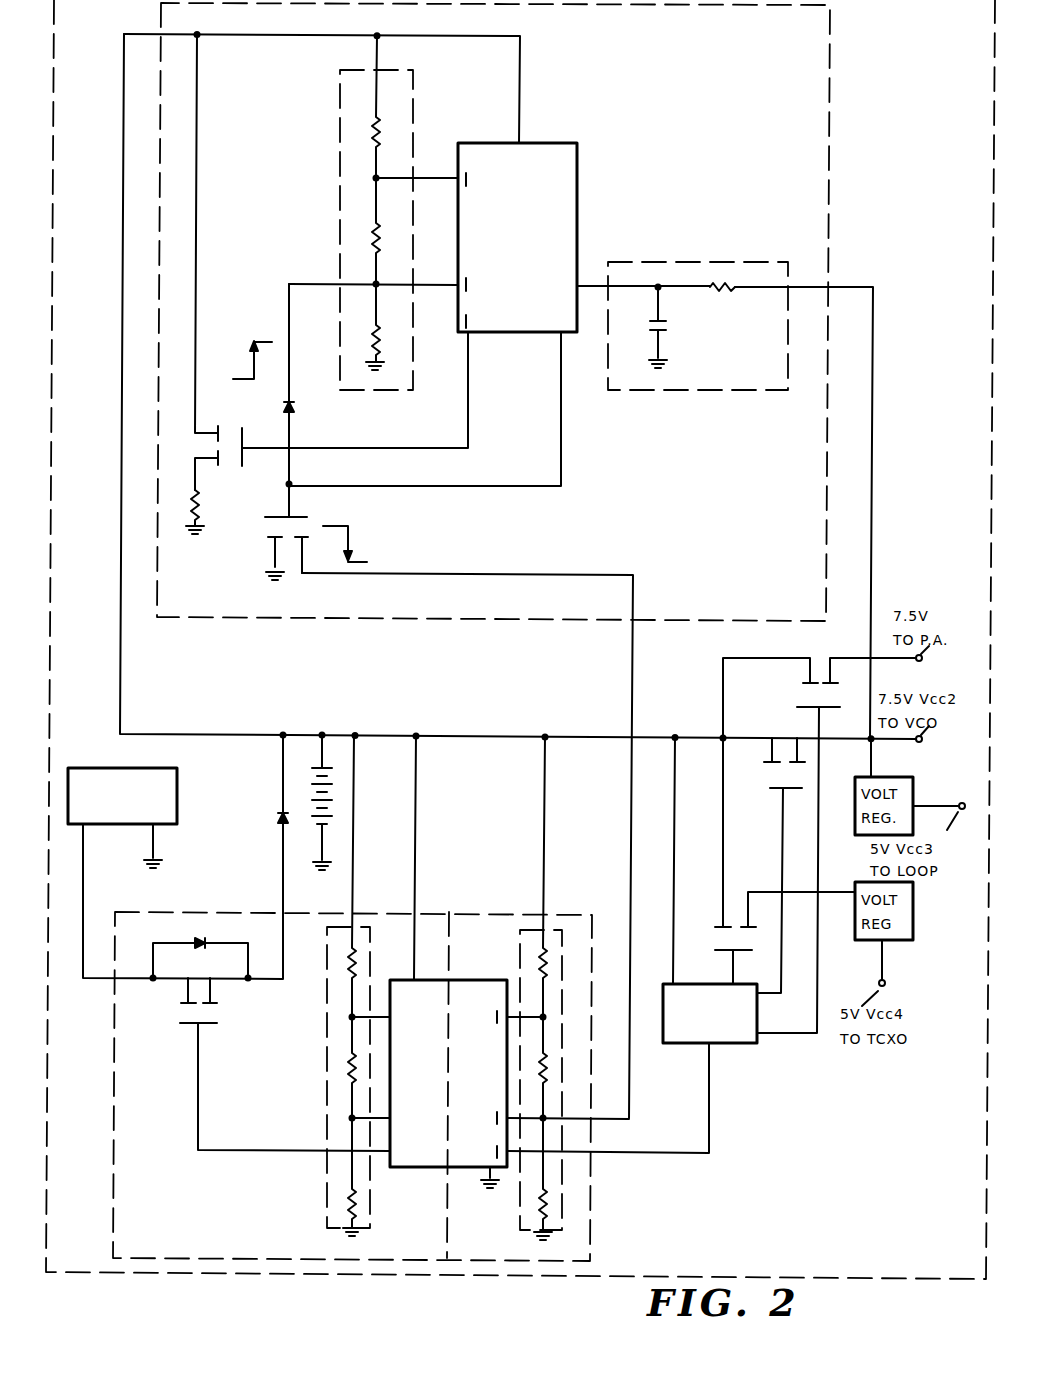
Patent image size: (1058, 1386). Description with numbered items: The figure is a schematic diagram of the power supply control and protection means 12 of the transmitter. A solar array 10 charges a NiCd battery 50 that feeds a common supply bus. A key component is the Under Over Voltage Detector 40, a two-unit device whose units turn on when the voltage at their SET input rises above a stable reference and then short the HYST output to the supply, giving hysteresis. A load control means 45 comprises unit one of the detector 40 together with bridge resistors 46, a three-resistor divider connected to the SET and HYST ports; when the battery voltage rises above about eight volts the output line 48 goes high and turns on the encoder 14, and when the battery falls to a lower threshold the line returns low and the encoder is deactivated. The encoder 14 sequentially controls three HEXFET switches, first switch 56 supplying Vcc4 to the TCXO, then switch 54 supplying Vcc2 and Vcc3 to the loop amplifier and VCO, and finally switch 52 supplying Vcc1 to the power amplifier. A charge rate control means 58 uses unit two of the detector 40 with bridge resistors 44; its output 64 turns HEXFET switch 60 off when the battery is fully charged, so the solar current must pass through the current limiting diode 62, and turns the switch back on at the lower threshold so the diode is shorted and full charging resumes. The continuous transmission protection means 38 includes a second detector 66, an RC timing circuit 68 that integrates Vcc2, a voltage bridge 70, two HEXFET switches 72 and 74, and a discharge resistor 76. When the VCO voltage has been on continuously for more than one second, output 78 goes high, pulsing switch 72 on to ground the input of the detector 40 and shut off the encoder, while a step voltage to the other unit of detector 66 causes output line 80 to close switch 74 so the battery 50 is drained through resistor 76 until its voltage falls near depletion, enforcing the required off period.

The solar array 10 is at (178, 770).
The power supply control and protection means 12 is at (937, 3).
The encoder 14 is at (733, 1044).
The continuous transmission protection means 38 is at (830, 55).
The Under Over Voltage Detector (UOVD) 40 is at (418, 1170).
The bridge resistors 44 is at (323, 990).
The load control means 45 is at (467, 910).
The bridge resistors 46 is at (518, 931).
The output line 48 is at (710, 1127).
The battery 50 is at (308, 815).
The HEXFET switch 52 is at (803, 706).
The HEXFET switch 54 is at (770, 788).
The HEXFET switch 56 is at (727, 950).
The charge rate control means 58 is at (429, 908).
The HEXFET switch 60 is at (187, 1025).
The current limiting diode 62 is at (180, 940).
The output 64 is at (237, 1148).
The Under Over Voltage Detector (UOVD) 66 is at (545, 144).
The RC timing circuit 68 is at (692, 263).
The voltage bridge 70 is at (417, 93).
The HEXFET switch 72 is at (297, 516).
The HEXFET switch 74 is at (243, 431).
The discharge resistor 76 is at (198, 501).
The output 78 is at (562, 368).
The output line 80 is at (468, 371).